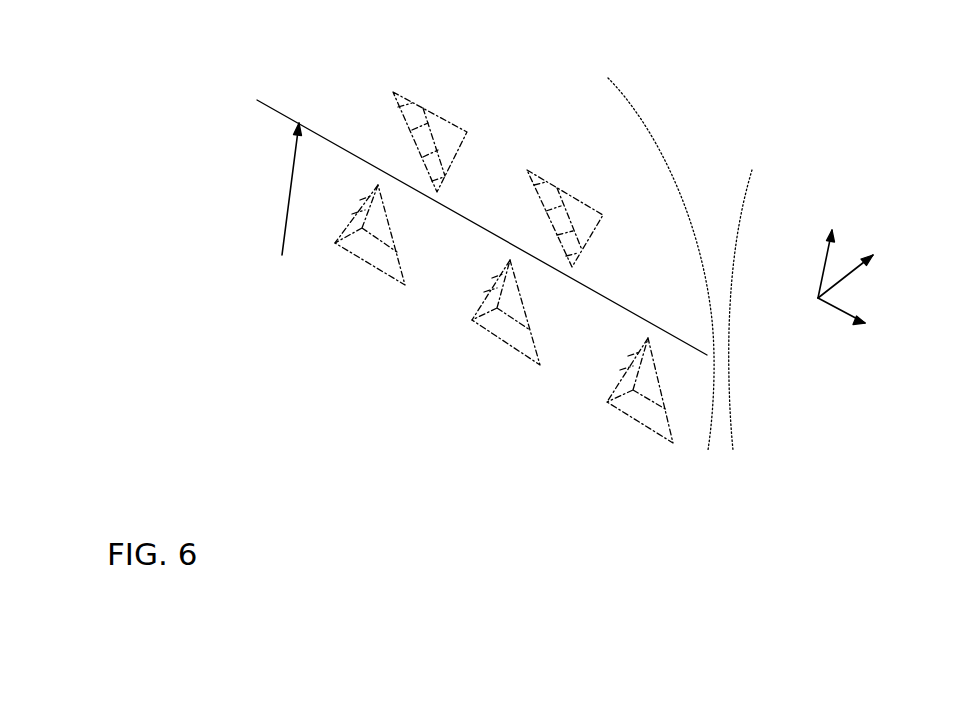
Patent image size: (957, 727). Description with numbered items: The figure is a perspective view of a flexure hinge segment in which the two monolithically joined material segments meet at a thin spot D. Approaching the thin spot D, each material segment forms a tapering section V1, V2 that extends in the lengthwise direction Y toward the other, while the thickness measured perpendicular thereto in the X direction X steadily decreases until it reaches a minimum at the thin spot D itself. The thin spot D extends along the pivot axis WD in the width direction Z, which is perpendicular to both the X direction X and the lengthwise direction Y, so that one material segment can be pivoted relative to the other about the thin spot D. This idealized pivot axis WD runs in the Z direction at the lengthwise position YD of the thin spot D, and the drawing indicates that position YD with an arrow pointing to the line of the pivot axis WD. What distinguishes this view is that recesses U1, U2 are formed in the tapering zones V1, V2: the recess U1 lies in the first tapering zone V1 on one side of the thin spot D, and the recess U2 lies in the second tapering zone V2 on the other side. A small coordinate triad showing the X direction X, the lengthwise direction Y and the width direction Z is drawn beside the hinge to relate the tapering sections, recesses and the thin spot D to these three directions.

The pivot axis WD is at (273, 115).
The lengthwise position of the thin spot YD is at (269, 201).
The first tapering section V1 is at (498, 157).
The second tapering section V2 is at (472, 319).
The recess U1 is at (455, 145).
The recess U2 is at (506, 357).
The thin spot D is at (722, 362).
The X direction X is at (858, 258).
The lengthwise direction Y is at (831, 244).
The width direction Z is at (855, 321).